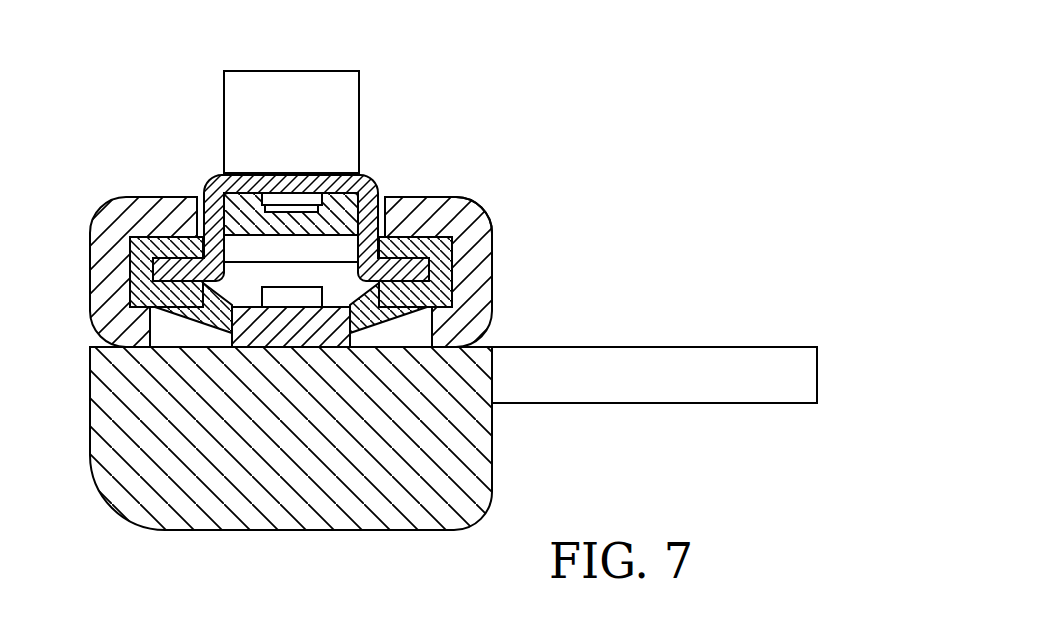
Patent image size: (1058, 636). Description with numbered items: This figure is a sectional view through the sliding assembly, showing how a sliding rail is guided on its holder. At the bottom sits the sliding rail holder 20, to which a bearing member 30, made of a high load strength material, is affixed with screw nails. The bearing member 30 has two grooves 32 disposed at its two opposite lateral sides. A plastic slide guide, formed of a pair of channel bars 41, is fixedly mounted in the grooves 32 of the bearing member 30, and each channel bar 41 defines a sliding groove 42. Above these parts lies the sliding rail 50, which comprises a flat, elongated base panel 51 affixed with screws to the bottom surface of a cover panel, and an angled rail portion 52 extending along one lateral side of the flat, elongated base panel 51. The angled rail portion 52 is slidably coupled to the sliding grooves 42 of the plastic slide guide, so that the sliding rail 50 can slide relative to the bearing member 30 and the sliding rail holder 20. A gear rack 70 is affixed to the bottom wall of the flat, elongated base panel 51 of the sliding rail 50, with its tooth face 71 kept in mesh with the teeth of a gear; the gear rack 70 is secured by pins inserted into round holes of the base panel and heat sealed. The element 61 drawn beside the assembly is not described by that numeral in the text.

The sliding rail holder 20 is at (158, 465).
The bearing member 30 is at (320, 222).
The groove 32 is at (487, 218).
The channel bar 41 is at (123, 253).
The sliding groove 42 is at (343, 222).
The sliding rail 50 is at (205, 175).
The flat, elongated base panel 51 is at (335, 176).
The angled rail portion 52 is at (172, 242).
The lead plate 61 is at (692, 360).
The gear rack 70 is at (289, 140).
The tooth face 71 is at (283, 250).